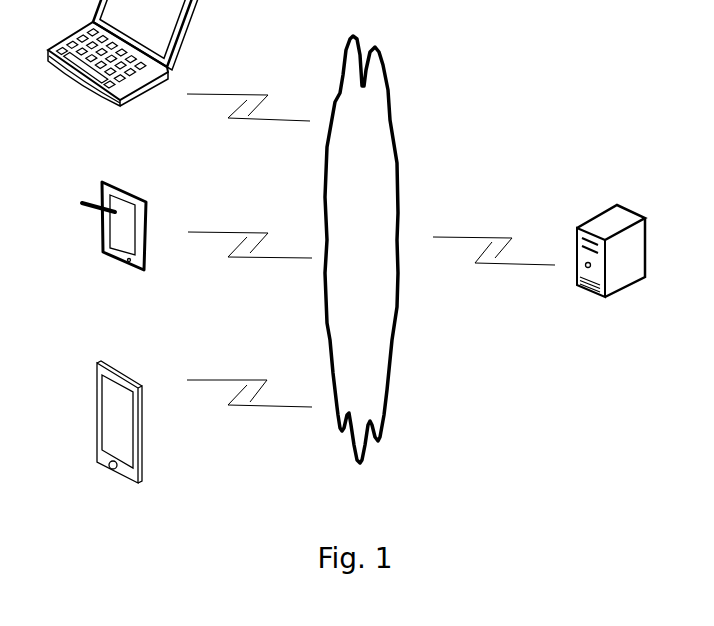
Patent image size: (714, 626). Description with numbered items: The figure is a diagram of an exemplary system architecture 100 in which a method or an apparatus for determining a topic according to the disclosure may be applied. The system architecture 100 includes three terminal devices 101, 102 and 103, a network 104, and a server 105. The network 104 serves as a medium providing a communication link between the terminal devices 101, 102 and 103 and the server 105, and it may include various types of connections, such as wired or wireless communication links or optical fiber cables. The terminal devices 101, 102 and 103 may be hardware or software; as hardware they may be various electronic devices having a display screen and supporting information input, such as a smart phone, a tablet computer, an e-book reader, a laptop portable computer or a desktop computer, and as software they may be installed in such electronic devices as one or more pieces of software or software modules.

The system architecture 100 is at (598, 16).
The terminal device 101 is at (119, 442).
The terminal device 102 is at (114, 244).
The terminal device 103 is at (123, 69).
The network 104 is at (361, 249).
The server 105 is at (611, 273).